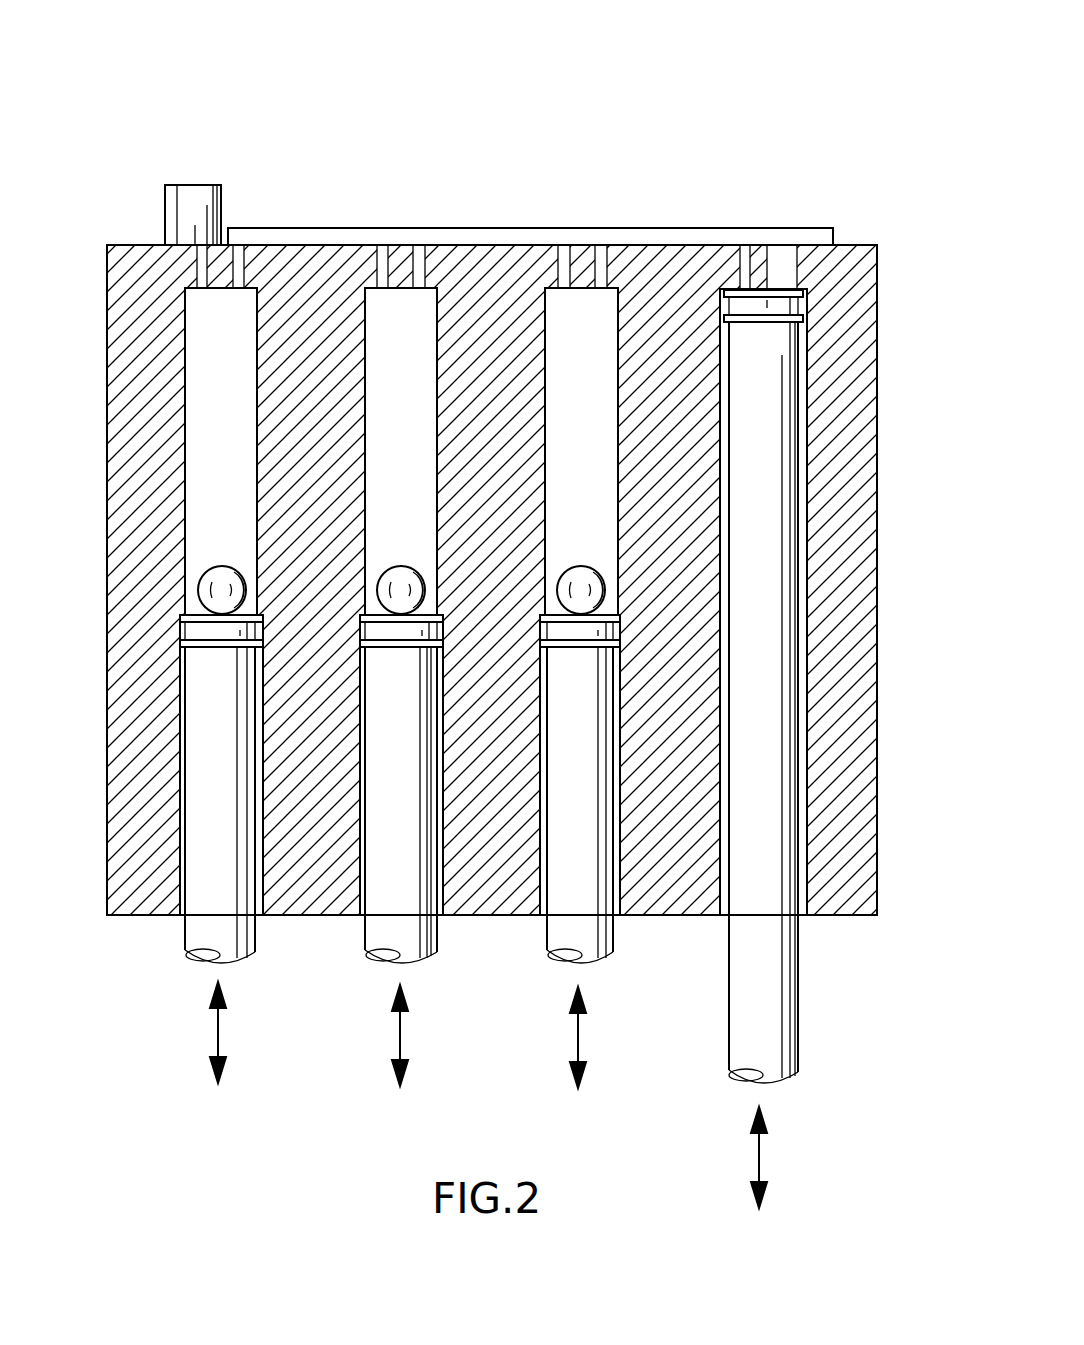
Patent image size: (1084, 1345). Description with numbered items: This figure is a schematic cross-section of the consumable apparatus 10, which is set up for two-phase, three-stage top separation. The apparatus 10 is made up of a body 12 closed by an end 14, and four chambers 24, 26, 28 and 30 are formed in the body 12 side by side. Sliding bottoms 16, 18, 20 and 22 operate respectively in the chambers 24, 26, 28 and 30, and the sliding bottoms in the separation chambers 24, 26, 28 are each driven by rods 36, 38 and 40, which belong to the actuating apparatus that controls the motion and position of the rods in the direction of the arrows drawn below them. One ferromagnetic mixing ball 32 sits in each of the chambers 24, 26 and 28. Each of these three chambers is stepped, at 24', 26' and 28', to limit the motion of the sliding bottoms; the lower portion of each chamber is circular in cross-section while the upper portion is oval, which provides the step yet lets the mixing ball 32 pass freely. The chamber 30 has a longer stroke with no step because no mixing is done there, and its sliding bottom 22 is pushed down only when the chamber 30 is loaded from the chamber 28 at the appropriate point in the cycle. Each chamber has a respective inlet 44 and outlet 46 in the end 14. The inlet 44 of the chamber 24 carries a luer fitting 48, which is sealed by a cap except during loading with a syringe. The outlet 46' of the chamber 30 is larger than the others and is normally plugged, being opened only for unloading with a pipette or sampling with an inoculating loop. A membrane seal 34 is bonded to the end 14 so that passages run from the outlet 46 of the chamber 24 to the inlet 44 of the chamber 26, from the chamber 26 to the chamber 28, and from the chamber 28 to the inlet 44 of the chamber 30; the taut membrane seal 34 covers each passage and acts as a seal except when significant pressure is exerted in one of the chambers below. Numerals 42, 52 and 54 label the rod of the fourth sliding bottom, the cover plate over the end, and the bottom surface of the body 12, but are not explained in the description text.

The apparatus 10 is at (728, 83).
The body 12 is at (847, 380).
The end 14 is at (870, 246).
The sliding bottom 16 is at (193, 627).
The sliding bottom 18 is at (375, 637).
The sliding bottom 20 is at (554, 637).
The sliding bottom 22 is at (742, 307).
The chamber 24 is at (163, 451).
The step 24' is at (166, 737).
The chamber 26 is at (445, 389).
The step 26' is at (366, 788).
The chamber 28 is at (609, 391).
The step 28' is at (618, 785).
The chamber 30 is at (800, 372).
The mixing ball 32 is at (217, 565).
The membrane seal 34 is at (532, 242).
The rod 36 is at (200, 963).
The rod 38 is at (385, 967).
The rod 40 is at (563, 967).
The fourth piston rod 42 is at (727, 988).
The inlet 44 is at (383, 250).
The outlet 46 is at (405, 208).
The outlet 46' is at (830, 233).
The luer fitting 48 is at (170, 185).
The cover plate 52 is at (702, 229).
The lower surface of housing 54 is at (843, 916).